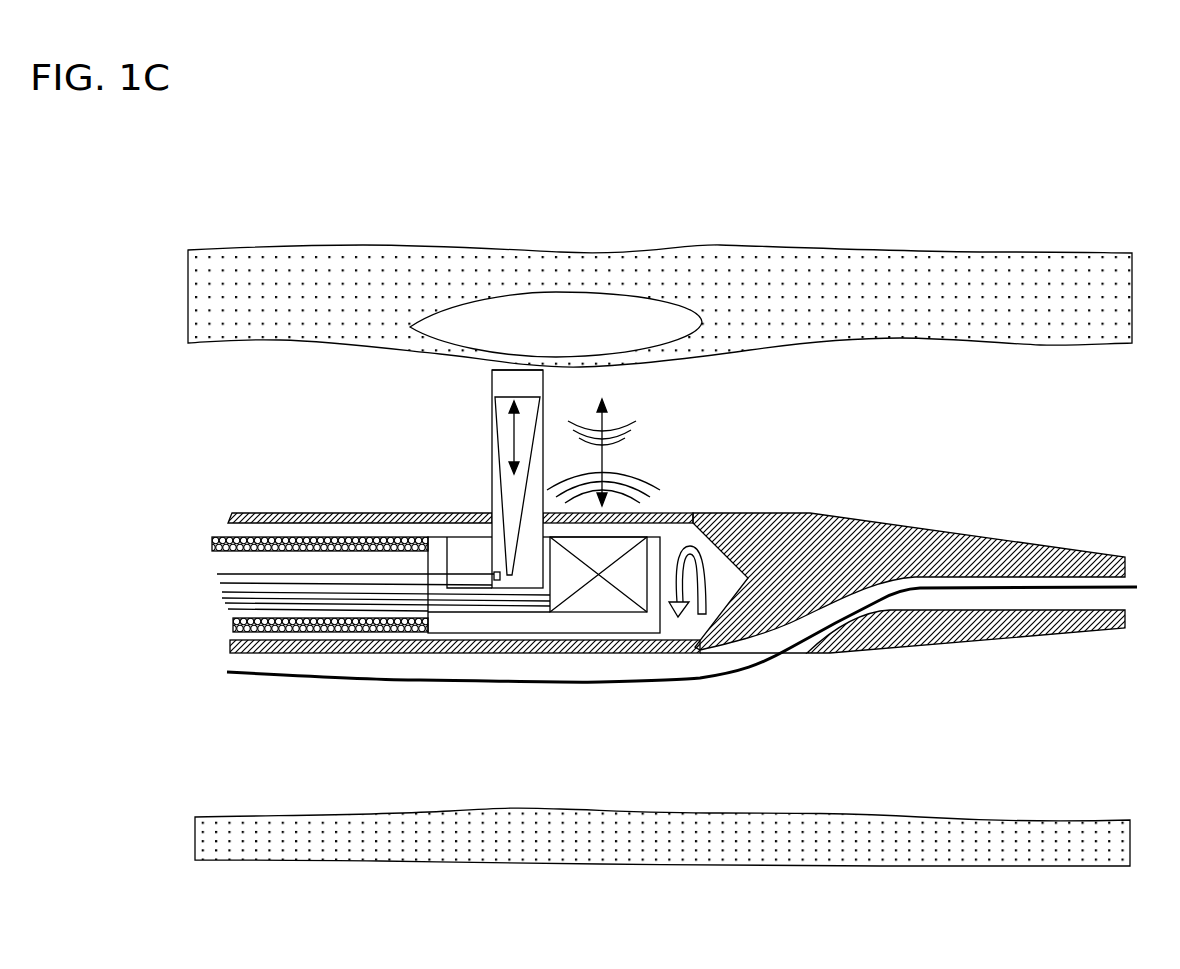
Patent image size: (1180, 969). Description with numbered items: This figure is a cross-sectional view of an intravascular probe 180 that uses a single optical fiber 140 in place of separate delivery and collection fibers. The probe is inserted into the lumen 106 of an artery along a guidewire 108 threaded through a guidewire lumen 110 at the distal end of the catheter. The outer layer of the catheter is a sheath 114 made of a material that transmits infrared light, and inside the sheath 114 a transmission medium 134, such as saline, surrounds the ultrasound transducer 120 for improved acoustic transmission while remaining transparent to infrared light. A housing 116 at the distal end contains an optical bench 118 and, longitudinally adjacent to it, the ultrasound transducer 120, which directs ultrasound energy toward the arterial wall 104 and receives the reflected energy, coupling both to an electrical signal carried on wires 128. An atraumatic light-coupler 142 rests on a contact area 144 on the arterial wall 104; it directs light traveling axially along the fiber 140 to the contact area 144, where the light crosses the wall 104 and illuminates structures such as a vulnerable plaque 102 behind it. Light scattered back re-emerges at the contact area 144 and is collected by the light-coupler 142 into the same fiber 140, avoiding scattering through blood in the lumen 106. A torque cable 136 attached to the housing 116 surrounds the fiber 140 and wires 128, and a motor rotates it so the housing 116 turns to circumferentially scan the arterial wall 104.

The vulnerable plaque 102 is at (572, 334).
The arterial wall 104 is at (998, 345).
The lumen 106 is at (1006, 473).
The guidewire 108 is at (462, 686).
The guidewire lumen 110 is at (965, 617).
The sheath 114 is at (290, 508).
The housing 116 is at (585, 625).
The optical bench 118 is at (460, 547).
The ultrasound transducer 120 is at (503, 585).
The wires 128 is at (222, 602).
The transmission medium 134 is at (683, 632).
The torque cable 136 is at (215, 538).
The single optical fiber 140 is at (216, 578).
The atraumatic light-coupler 142 is at (490, 432).
The contact area 144 is at (506, 358).
The intravascular probe 180 is at (830, 456).